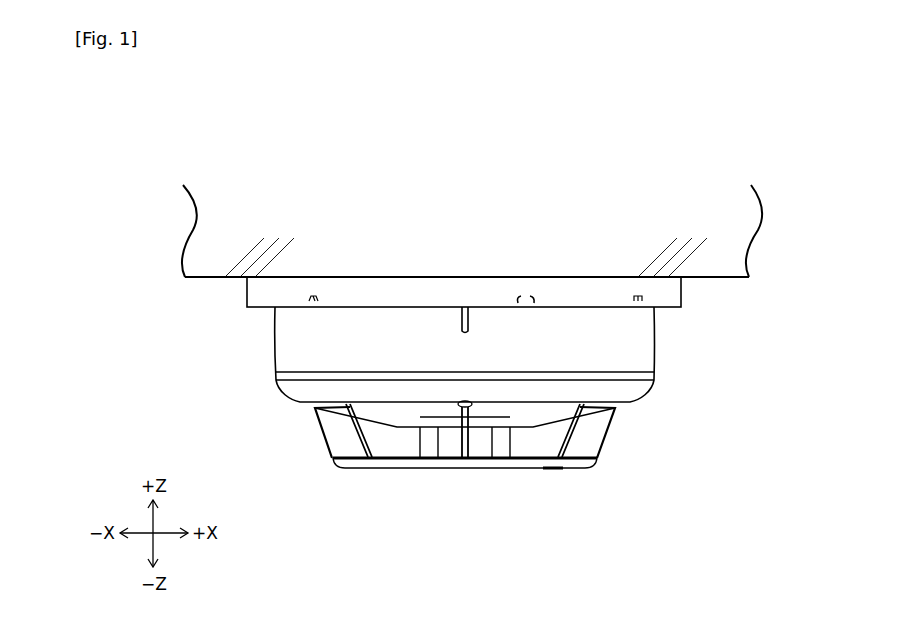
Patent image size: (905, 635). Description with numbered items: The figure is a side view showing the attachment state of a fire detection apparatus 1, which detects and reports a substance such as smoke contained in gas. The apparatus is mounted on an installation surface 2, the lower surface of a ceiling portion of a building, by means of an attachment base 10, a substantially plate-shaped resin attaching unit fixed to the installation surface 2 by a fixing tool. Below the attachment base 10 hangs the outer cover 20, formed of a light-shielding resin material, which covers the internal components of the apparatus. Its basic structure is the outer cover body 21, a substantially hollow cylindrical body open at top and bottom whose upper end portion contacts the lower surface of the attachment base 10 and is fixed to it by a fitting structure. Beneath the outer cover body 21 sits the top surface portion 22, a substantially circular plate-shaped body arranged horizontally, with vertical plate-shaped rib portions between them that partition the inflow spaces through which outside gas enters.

The fire detection apparatus 1 is at (510, 335).
The installation surface 2 is at (195, 279).
The attachment base 10 is at (668, 290).
The outer cover 20 is at (515, 354).
The outer cover body 21 is at (642, 325).
The top surface portion 22 is at (487, 465).